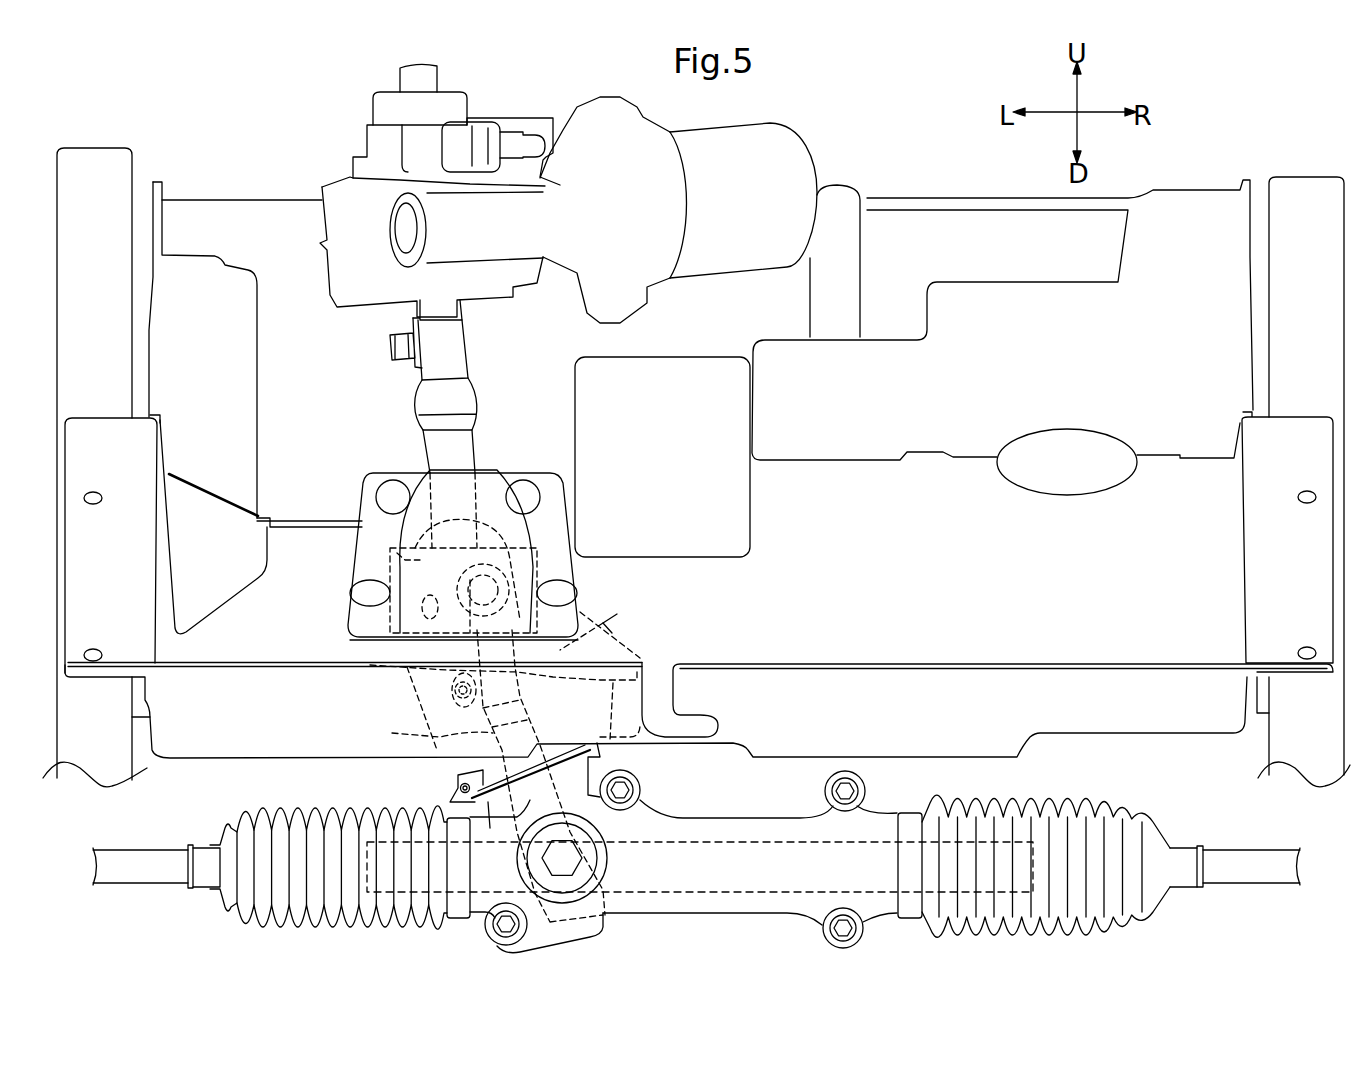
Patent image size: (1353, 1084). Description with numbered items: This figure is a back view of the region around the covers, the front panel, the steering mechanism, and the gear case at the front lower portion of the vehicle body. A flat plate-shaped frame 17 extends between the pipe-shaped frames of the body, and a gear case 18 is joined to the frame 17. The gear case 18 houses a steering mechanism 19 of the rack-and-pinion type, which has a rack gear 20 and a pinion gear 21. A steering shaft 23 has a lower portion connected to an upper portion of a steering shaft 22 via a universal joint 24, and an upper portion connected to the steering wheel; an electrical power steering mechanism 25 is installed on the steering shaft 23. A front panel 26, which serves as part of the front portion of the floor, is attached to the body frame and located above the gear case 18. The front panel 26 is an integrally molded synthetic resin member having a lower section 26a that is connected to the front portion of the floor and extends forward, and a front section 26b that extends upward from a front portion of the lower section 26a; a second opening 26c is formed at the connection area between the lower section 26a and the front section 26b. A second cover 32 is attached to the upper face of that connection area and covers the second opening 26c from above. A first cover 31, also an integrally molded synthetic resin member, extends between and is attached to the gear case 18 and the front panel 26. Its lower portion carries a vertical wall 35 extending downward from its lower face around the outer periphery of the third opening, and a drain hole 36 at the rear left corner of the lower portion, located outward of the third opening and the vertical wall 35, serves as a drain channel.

The frame 17 is at (98, 153).
The gear case 18 is at (696, 852).
The steering mechanism 19 is at (675, 865).
The rack gear 20 is at (703, 890).
The pinion gear 21 is at (590, 915).
The steering shaft 22 is at (427, 731).
The steering shaft 23 is at (463, 450).
The universal joint 24 is at (507, 610).
The electrical power steering mechanism 25 is at (330, 197).
The front panel 26 is at (699, 422).
The lower section 26a is at (307, 543).
The front section 26b is at (230, 230).
The second opening 26c is at (397, 553).
The first cover 31 is at (603, 623).
The second cover 32 is at (493, 531).
The vertical wall 35 is at (587, 797).
The drain hole 36 is at (462, 784).